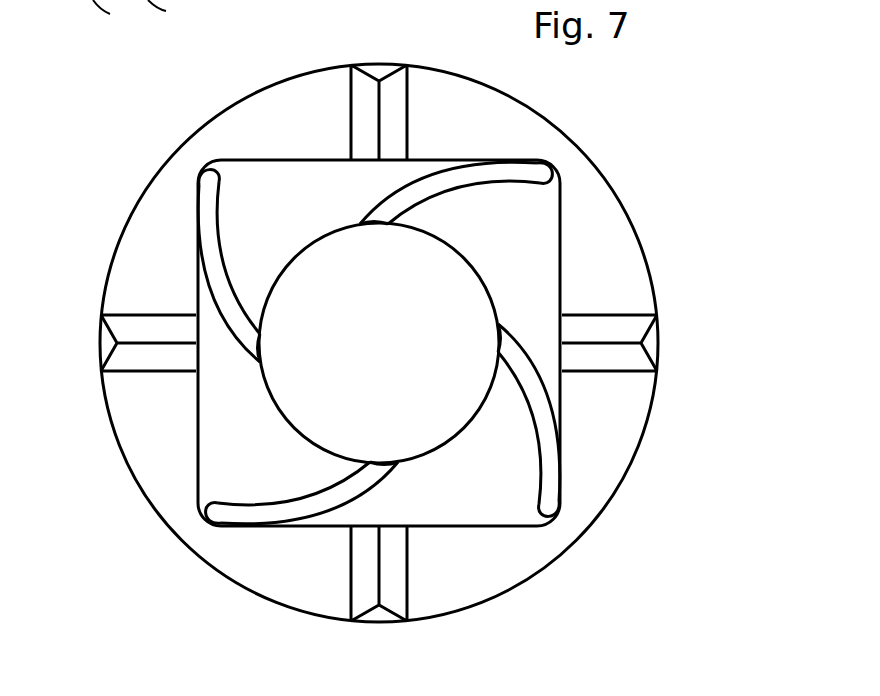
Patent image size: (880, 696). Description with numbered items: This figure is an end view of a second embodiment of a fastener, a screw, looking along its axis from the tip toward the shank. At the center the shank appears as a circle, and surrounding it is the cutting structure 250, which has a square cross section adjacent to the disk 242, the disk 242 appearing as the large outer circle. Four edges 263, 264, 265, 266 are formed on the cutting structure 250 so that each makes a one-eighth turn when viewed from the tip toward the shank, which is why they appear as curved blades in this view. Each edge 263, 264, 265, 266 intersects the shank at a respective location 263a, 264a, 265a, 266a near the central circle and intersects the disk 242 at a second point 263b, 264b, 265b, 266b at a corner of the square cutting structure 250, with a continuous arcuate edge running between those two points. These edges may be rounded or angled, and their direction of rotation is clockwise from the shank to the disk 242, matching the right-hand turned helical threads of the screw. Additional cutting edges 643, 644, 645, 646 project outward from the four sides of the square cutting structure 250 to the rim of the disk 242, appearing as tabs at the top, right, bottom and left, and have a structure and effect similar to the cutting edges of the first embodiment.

The disk 242 is at (447, 343).
The cutting structure 250 is at (314, 343).
The edge 263 is at (489, 192).
The location 263a is at (404, 257).
The second point 263b is at (578, 204).
The edge 264 is at (538, 450).
The location 264a is at (425, 346).
The second point 264b is at (504, 539).
The edge 265 is at (254, 522).
The location 265a is at (424, 488).
The second point 265b is at (245, 543).
The edge 266 is at (210, 247).
The location 266a is at (191, 373).
The second point 266b is at (275, 148).
The additional cutting edge 643 is at (342, 86).
The additional cutting edge 644 is at (665, 355).
The additional cutting edge 645 is at (296, 589).
The additional cutting edge 646 is at (108, 343).